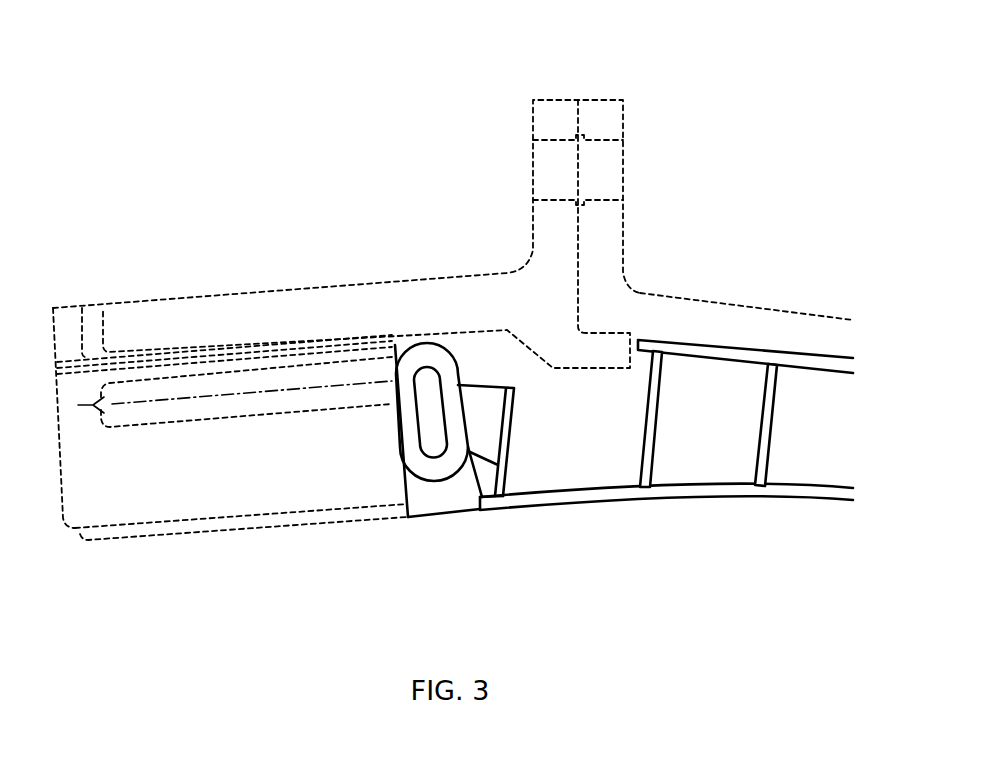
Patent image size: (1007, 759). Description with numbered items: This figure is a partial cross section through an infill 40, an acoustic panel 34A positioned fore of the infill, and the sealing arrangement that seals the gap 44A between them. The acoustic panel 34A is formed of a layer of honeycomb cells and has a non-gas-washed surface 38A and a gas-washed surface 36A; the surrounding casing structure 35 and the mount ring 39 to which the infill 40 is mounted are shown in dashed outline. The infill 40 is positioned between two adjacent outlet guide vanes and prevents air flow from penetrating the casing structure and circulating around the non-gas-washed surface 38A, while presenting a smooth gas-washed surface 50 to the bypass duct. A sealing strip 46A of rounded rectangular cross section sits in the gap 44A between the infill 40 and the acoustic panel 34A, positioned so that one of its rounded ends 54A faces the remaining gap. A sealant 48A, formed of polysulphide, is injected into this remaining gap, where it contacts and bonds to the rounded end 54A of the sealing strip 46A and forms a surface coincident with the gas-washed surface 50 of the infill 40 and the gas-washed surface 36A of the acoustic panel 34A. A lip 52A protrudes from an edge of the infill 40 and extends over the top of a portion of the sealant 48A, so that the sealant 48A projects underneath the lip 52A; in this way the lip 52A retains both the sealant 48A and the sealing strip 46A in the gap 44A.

The vehicle body structure 35 is at (141, 305).
The non-gas-washed surface 38A is at (183, 357).
The sealing strip 46A is at (418, 362).
The mount ring 39 is at (770, 313).
The gap 44A is at (480, 420).
The acoustic panel 34A is at (212, 493).
The gas-washed surface 36A is at (257, 527).
The rounded end 54A is at (430, 480).
The sealant 48A is at (447, 503).
The lip 52A is at (486, 506).
The infill 40 is at (692, 467).
The gas-washed surface 50 is at (790, 499).